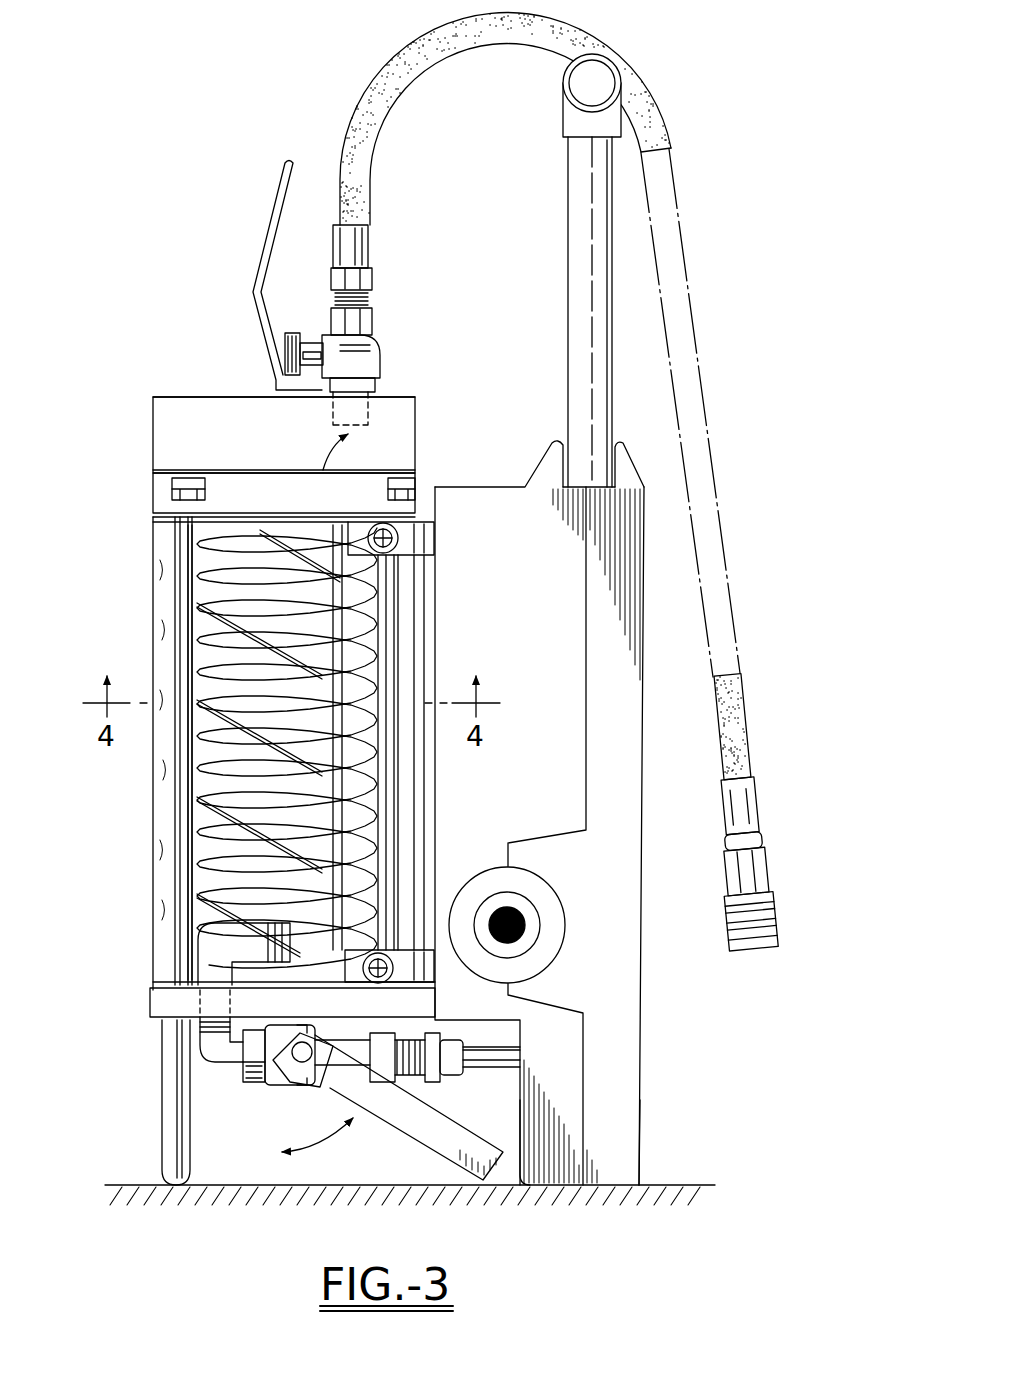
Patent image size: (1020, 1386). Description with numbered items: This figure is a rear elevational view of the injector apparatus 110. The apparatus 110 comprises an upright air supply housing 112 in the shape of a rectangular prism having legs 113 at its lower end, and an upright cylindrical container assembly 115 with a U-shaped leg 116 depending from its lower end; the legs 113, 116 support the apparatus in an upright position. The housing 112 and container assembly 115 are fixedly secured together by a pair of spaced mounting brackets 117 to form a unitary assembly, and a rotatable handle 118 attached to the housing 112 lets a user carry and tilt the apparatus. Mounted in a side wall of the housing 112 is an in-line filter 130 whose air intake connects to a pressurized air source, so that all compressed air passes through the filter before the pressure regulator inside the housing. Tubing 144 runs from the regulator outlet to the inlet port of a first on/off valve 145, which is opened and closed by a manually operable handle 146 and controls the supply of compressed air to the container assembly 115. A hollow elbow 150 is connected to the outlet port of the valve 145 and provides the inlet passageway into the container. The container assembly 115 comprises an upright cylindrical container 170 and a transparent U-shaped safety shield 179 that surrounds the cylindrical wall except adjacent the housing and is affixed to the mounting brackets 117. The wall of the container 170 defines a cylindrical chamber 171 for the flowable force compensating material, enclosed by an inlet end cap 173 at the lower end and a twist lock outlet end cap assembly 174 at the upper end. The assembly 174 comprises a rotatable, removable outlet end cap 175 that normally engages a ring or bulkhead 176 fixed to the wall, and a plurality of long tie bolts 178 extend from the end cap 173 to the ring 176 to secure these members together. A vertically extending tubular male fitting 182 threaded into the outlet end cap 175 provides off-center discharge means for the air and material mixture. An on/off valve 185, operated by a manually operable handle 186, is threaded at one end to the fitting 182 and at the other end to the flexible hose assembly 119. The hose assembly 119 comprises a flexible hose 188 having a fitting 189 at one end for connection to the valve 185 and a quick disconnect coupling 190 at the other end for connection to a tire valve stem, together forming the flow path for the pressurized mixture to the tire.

The apparatus 110 is at (209, 155).
The air supply housing 112 is at (641, 1050).
The legs 113 is at (628, 1152).
The cylindrical container assembly 115 is at (150, 560).
The U-shaped leg 116 is at (162, 1117).
The mounting brackets 117 is at (434, 524).
The rotatable handle 118 is at (567, 133).
The flexible hose assembly 119 is at (750, 710).
The in-line filter 130 is at (550, 884).
The tubing 144 is at (498, 1078).
The first on/off valve 145 is at (288, 1090).
The handle 146 is at (410, 1130).
The hollow elbow 150 is at (212, 1070).
The cylindrical container 170 is at (210, 638).
The cylindrical chamber 171 is at (168, 668).
The inlet end cap 173 is at (150, 1000).
The twist lock outlet end cap assembly 174 is at (150, 440).
The outlet end cap 175 is at (153, 402).
The ring or bulkhead 176 is at (153, 486).
The tie bolts 178 is at (190, 598).
The transparent safety shield 179 is at (158, 846).
The tubular male fitting 182 is at (375, 392).
The on/off valve 185 is at (380, 348).
The handle 186 is at (272, 210).
The flexible hose 188 is at (390, 66).
The fitting 189 is at (369, 250).
The quick disconnect coupling 190 is at (790, 922).